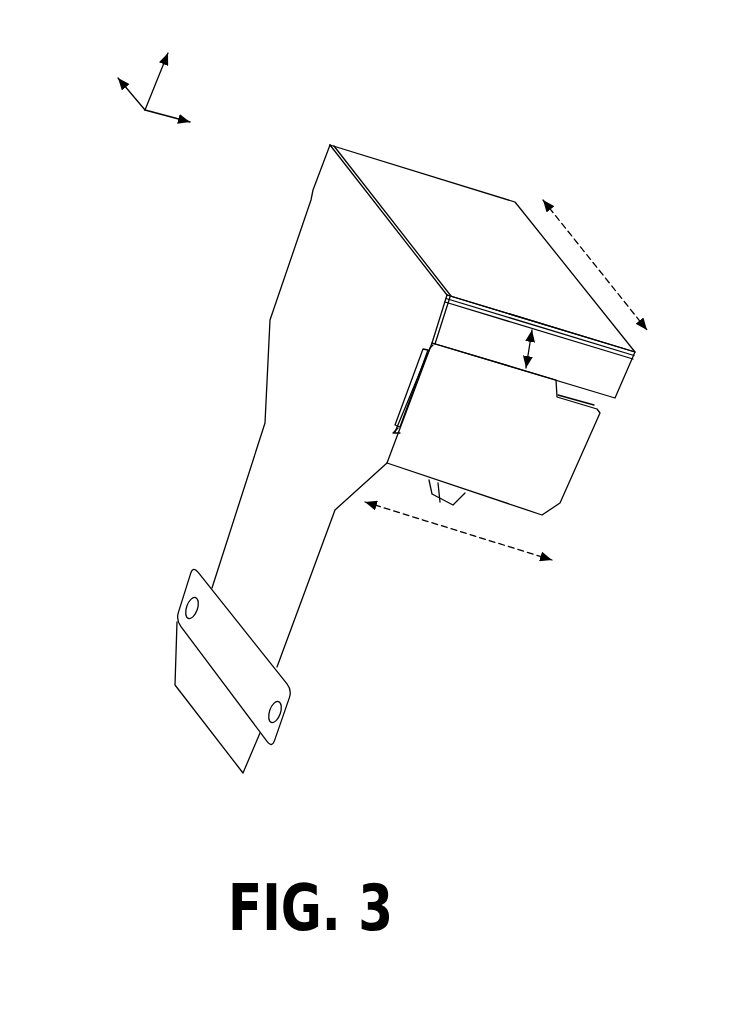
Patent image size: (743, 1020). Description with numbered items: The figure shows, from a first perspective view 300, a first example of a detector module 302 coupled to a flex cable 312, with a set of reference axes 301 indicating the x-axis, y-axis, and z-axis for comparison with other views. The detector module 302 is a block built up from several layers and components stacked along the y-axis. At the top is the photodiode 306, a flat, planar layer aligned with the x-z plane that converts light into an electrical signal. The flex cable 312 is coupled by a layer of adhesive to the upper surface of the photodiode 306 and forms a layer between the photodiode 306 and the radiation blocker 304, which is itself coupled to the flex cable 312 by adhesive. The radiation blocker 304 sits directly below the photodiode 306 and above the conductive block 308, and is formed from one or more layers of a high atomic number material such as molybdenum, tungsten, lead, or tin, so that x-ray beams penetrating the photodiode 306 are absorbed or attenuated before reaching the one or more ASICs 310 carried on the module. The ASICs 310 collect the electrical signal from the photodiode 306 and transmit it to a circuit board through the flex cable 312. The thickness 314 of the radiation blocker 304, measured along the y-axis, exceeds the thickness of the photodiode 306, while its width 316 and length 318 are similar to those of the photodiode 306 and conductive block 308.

The first perspective view 300 is at (593, 60).
The set of reference axes 301 is at (195, 75).
The detector module 302 is at (562, 168).
The radiation blocker 304 is at (615, 370).
The photodiode 306 is at (463, 248).
The conductive block 308 is at (558, 463).
The ASICs 310 is at (418, 386).
The flex cable 312 is at (317, 369).
The thickness 314 is at (527, 355).
The width 316 is at (452, 528).
The length 318 is at (598, 264).